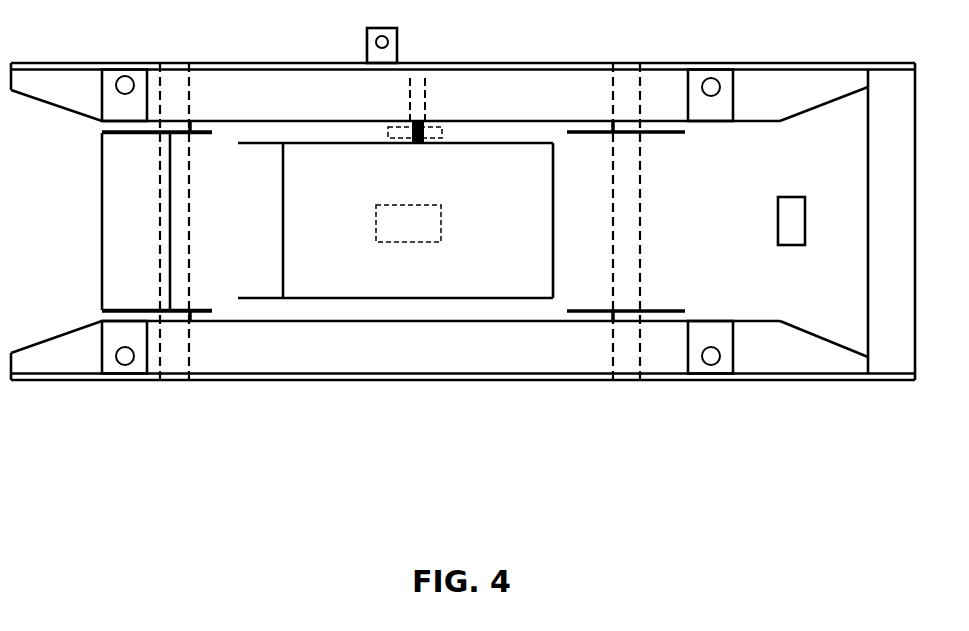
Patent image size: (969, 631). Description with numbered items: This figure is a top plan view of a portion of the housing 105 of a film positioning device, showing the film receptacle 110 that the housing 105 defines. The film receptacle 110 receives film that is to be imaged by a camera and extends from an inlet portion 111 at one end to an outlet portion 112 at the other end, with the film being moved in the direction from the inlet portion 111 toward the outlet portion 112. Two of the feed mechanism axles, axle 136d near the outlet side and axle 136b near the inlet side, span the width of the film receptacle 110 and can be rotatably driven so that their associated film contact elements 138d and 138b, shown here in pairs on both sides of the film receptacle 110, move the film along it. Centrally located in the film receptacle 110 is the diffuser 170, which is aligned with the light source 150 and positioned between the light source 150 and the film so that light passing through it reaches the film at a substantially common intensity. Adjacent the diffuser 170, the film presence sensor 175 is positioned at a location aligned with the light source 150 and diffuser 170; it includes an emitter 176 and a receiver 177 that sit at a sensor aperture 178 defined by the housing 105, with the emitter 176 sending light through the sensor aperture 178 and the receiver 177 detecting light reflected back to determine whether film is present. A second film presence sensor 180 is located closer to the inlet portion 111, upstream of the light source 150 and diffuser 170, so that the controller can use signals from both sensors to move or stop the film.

The housing 105 is at (281, 62).
The film receptacle 110 is at (742, 158).
The inlet portion 111 is at (835, 283).
The outlet portion 112 is at (125, 215).
The axle 136d is at (190, 94).
The axle 136b is at (612, 94).
The film contact element 138d is at (203, 137).
The film contact element 138b is at (663, 137).
The light source 150 is at (406, 244).
The diffuser 170 is at (330, 262).
The film presence sensor 175 is at (418, 145).
The emitter 176 is at (397, 128).
The receiver 177 is at (432, 128).
The sensor aperture 178 is at (421, 126).
The second film presence sensor 180 is at (808, 223).